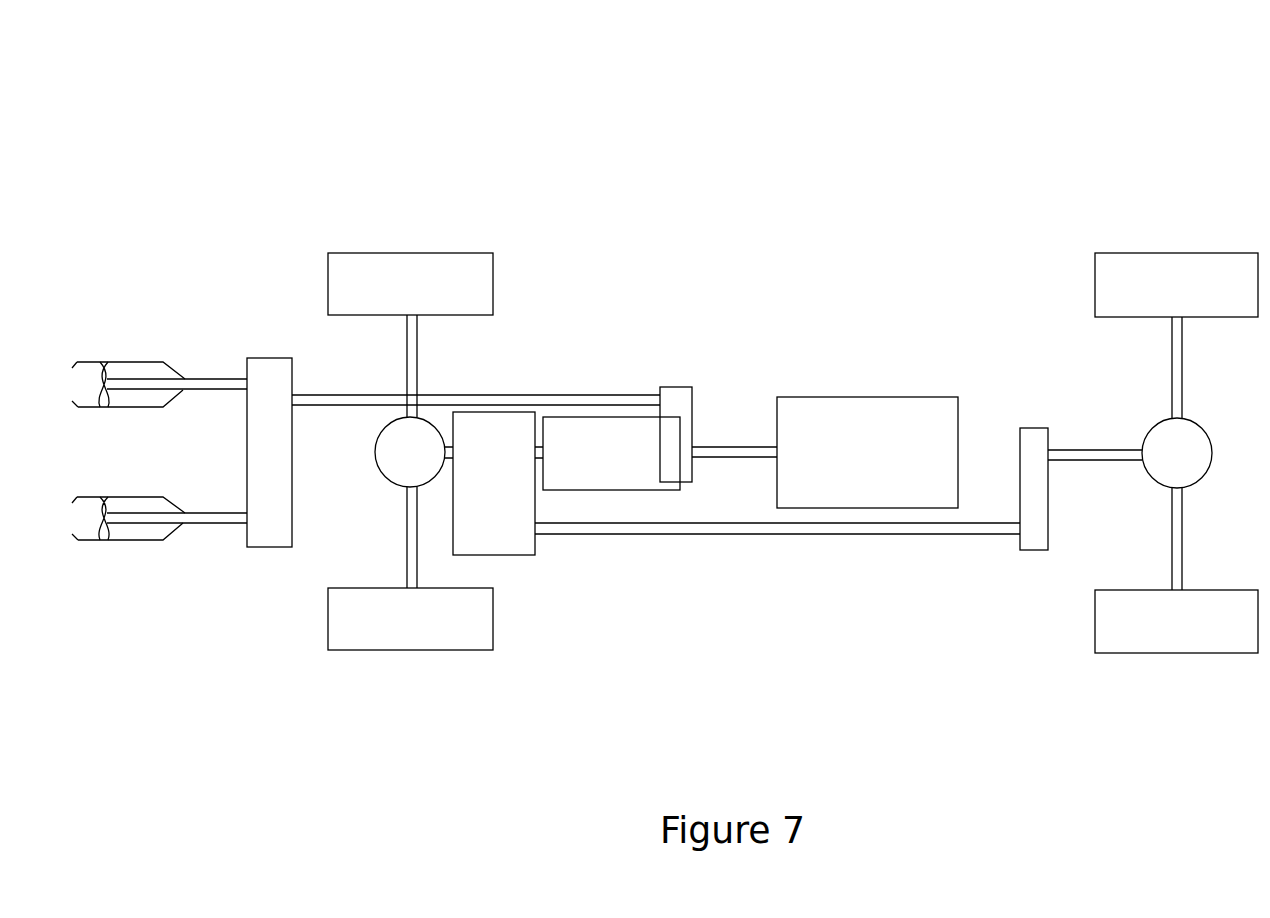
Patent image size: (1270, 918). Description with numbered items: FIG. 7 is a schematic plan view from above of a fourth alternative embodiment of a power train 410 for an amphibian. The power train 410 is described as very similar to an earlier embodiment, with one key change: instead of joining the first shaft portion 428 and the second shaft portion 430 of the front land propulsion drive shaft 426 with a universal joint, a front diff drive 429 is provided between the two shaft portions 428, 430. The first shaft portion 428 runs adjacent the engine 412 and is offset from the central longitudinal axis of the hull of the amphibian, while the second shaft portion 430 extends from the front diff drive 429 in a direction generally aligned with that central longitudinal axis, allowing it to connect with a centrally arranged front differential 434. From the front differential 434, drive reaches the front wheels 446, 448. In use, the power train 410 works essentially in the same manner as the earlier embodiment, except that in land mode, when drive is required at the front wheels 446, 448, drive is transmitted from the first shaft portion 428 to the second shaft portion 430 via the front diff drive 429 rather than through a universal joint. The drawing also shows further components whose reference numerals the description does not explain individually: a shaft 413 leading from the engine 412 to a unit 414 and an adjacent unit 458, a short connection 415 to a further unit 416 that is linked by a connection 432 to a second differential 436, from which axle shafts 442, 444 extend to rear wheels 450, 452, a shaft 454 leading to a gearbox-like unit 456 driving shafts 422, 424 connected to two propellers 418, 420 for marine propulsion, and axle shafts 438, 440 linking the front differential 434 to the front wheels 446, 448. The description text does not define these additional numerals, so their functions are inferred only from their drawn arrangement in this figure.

The power train 410 is at (731, 172).
The engine 412 is at (864, 472).
The engine shaft 413 is at (740, 455).
The generator 414 is at (630, 468).
The generator shaft 415 is at (546, 440).
The motor 416 is at (516, 482).
The first propeller 418 is at (142, 370).
The second propeller 420 is at (146, 535).
The first propeller shaft 422 is at (216, 384).
The second propeller shaft 424 is at (225, 522).
The front land propulsion drive shaft 426 is at (905, 536).
The first shaft portion 428 is at (753, 528).
The front diff drive 429 is at (1040, 548).
The second shaft portion 430 is at (1088, 450).
The motor shaft 432 is at (448, 448).
The front differential 434 is at (1196, 467).
The differential 436 is at (428, 466).
The axle shaft 438 is at (1180, 368).
The axle shaft 440 is at (1180, 562).
The axle shaft 442 is at (414, 360).
The axle shaft 444 is at (408, 565).
The front wheel 446 is at (1186, 298).
The front wheel 448 is at (1187, 641).
The wheel 450 is at (428, 297).
The wheel 452 is at (428, 634).
The shaft 454 is at (355, 405).
The gearbox 456 is at (288, 455).
The coupling 458 is at (680, 400).